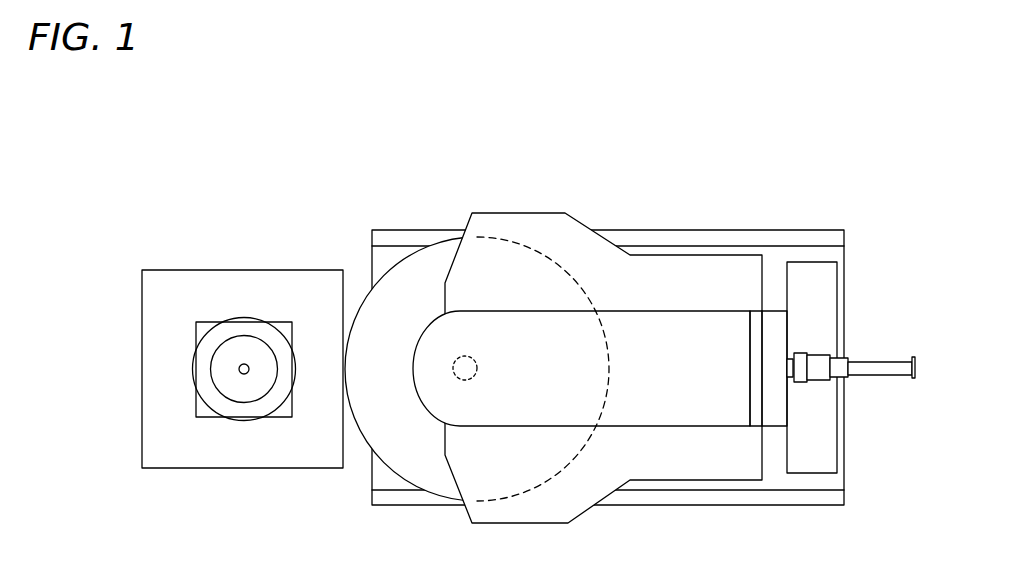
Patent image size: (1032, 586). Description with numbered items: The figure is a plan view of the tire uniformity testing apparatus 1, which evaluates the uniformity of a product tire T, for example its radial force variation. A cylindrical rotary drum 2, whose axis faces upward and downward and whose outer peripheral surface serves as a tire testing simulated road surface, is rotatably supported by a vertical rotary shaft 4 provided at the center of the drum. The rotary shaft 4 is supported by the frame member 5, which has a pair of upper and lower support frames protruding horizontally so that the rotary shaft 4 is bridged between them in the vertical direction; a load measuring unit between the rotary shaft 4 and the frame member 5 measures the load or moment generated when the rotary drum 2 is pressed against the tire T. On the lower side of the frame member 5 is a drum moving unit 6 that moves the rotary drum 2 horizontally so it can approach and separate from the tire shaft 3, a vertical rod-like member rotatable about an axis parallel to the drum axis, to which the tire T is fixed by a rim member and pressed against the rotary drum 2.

The tire uniformity testing apparatus 1 is at (630, 338).
The rotary drum 2 is at (404, 258).
The tire shaft 3 is at (244, 363).
The rotary shaft 4 is at (468, 356).
The frame member 5 is at (537, 213).
The drum moving unit 6 is at (677, 506).
The tire T is at (195, 356).